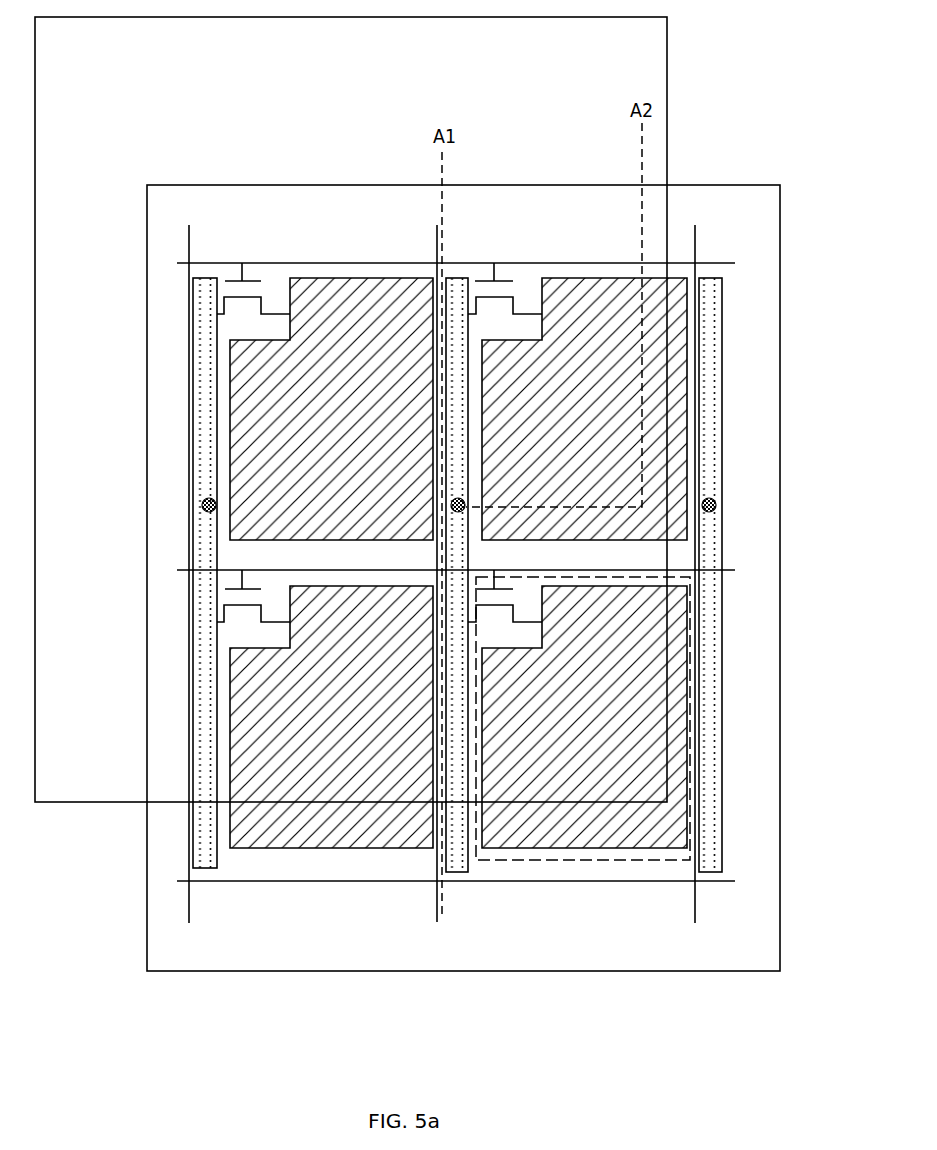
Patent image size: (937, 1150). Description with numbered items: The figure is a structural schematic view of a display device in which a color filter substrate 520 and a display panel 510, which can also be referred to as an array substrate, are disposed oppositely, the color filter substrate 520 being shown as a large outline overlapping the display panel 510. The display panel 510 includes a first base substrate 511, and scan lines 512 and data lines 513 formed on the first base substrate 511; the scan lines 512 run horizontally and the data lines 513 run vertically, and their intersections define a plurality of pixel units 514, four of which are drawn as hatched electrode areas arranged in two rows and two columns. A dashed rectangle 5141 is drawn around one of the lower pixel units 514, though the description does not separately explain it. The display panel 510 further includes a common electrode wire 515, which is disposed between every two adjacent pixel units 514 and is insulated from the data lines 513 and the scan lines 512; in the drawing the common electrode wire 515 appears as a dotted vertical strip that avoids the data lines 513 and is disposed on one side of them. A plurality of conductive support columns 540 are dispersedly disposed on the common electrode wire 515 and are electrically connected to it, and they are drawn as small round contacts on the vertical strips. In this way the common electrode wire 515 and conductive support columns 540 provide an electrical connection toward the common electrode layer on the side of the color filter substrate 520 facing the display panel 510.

The display panel 510 is at (632, 1029).
The first base substrate 511 is at (256, 937).
The scan lines 512 is at (295, 881).
The data lines 513 is at (437, 918).
The pixel units 514 is at (546, 860).
The pixel electrode extension region 5141 is at (606, 848).
The common electrode wire 515 is at (217, 867).
The color filter substrate 520 is at (70, 802).
The conductive support columns 540 is at (708, 500).